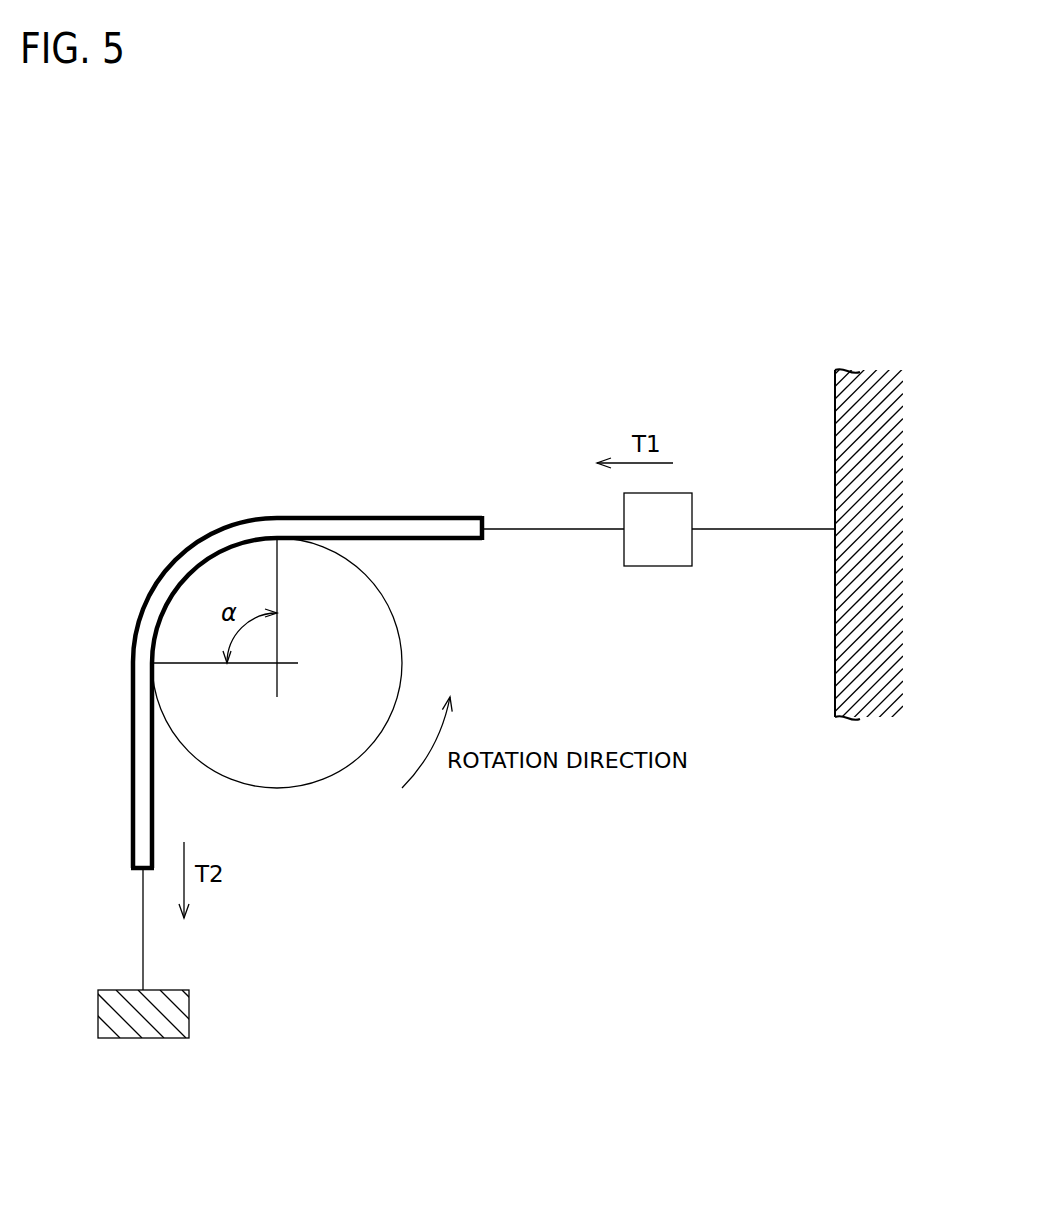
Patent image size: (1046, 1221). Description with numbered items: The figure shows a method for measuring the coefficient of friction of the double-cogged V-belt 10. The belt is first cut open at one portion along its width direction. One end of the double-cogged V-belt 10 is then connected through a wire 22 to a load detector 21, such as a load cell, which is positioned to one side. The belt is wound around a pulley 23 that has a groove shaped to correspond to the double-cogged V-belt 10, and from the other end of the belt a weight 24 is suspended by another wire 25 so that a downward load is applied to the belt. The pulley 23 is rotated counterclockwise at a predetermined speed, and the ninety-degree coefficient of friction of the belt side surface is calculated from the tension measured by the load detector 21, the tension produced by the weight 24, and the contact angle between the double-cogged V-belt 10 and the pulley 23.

The double-cogged V-belt 10 is at (190, 543).
The load detector 21 is at (656, 568).
The wire 22 is at (555, 527).
The pulley 23 is at (297, 790).
The weight 24 is at (98, 1005).
The wire 25 is at (143, 930).